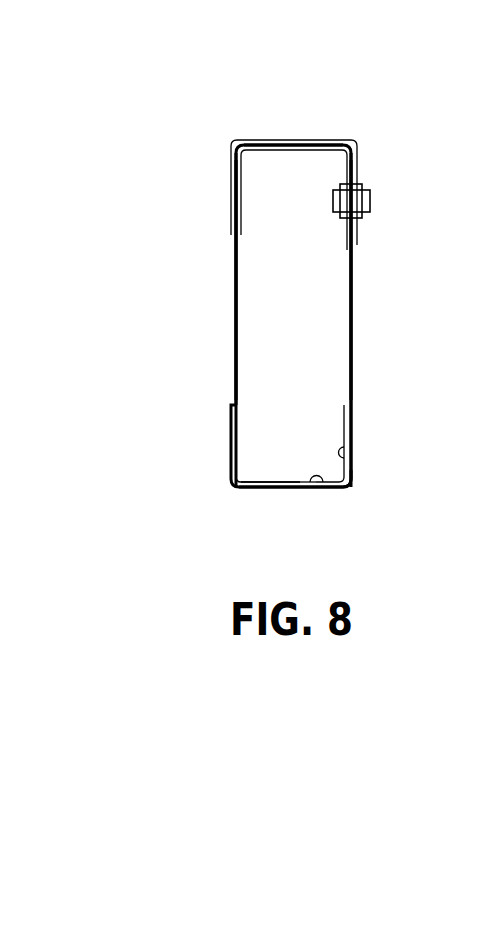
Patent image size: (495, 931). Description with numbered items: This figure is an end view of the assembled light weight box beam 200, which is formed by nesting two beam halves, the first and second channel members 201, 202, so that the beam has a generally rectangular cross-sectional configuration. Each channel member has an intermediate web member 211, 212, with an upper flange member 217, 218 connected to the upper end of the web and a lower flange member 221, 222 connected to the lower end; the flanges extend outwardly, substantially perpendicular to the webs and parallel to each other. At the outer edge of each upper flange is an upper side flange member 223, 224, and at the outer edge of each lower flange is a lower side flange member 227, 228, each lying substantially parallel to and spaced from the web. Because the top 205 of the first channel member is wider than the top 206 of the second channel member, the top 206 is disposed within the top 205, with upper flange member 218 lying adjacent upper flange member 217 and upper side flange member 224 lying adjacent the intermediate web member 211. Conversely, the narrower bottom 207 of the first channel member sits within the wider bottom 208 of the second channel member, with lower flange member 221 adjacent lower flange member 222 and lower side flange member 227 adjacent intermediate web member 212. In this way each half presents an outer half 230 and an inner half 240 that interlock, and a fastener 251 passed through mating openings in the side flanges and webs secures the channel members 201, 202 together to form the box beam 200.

The box beam 200 is at (361, 137).
The first channel member 201 is at (234, 328).
The second channel member 202 is at (353, 337).
The top of first channel member 205 is at (291, 124).
The top of second channel member 206 is at (266, 96).
The bottom of first channel member 207 is at (289, 504).
The bottom of second channel member 208 is at (248, 529).
The intermediate web member 211 is at (234, 295).
The intermediate web member 212 is at (353, 311).
The upper flange member 217 is at (262, 140).
The upper flange member 218 is at (326, 150).
The lower flange member 221 is at (314, 481).
The lower flange member 222 is at (262, 493).
The upper side flange member 223 is at (358, 163).
The upper side flange member 224 is at (244, 187).
The lower side flange member 227 is at (353, 458).
The lower side flange member 228 is at (230, 426).
The outer half 230 is at (233, 190).
The inner half 240 is at (243, 205).
The fastener 251 is at (366, 207).